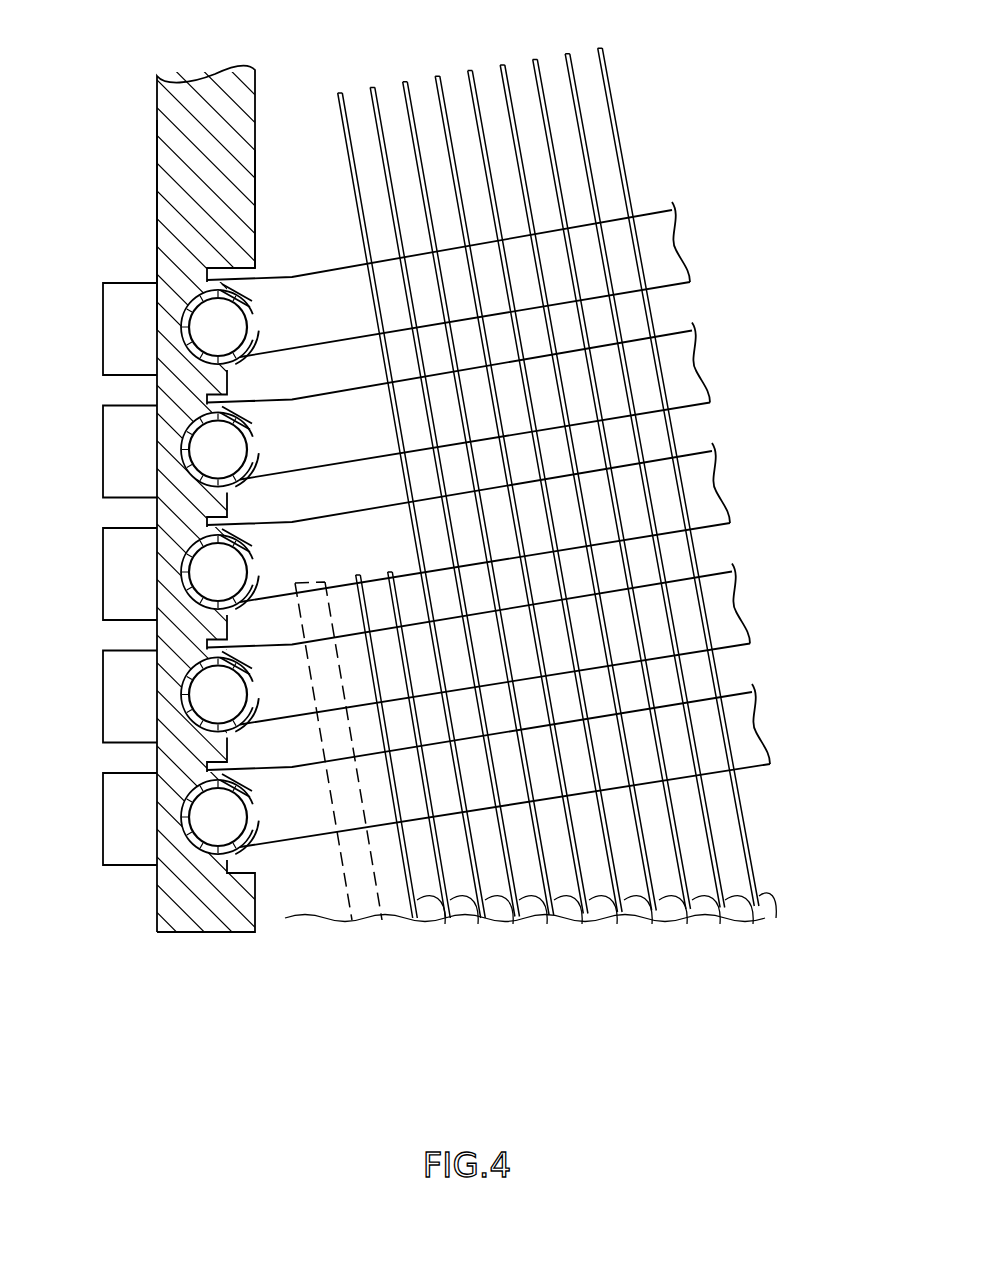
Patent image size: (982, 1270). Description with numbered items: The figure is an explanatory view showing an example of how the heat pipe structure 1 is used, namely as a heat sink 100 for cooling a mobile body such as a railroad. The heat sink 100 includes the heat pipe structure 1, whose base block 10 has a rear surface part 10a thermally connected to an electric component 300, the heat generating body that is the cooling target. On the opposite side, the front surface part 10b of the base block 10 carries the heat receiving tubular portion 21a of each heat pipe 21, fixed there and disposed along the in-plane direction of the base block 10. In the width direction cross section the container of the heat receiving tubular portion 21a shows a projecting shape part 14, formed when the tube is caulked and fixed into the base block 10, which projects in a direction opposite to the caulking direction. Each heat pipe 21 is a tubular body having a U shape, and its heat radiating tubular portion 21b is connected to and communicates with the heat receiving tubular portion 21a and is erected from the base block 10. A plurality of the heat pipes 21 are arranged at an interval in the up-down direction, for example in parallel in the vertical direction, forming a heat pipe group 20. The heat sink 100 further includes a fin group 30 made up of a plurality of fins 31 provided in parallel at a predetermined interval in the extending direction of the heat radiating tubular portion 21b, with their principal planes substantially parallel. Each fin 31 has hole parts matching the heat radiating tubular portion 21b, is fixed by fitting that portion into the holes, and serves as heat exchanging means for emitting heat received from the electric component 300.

The heat pipe structure 1 is at (286, 140).
The heat sink 100 is at (691, 127).
The base block 10 is at (157, 122).
The rear surface part 10a is at (157, 226).
The front surface part 10b is at (255, 222).
The projecting shape part 14 is at (256, 317).
The heat pipe group 20 is at (557, 517).
The heat pipe 21 is at (717, 236).
The heat receiving tubular portion 21a is at (236, 288).
The heat radiating tubular portion 21b is at (347, 334).
The fin group 30 is at (530, 576).
The fin 31 is at (758, 1041).
The electric component 300 is at (112, 332).